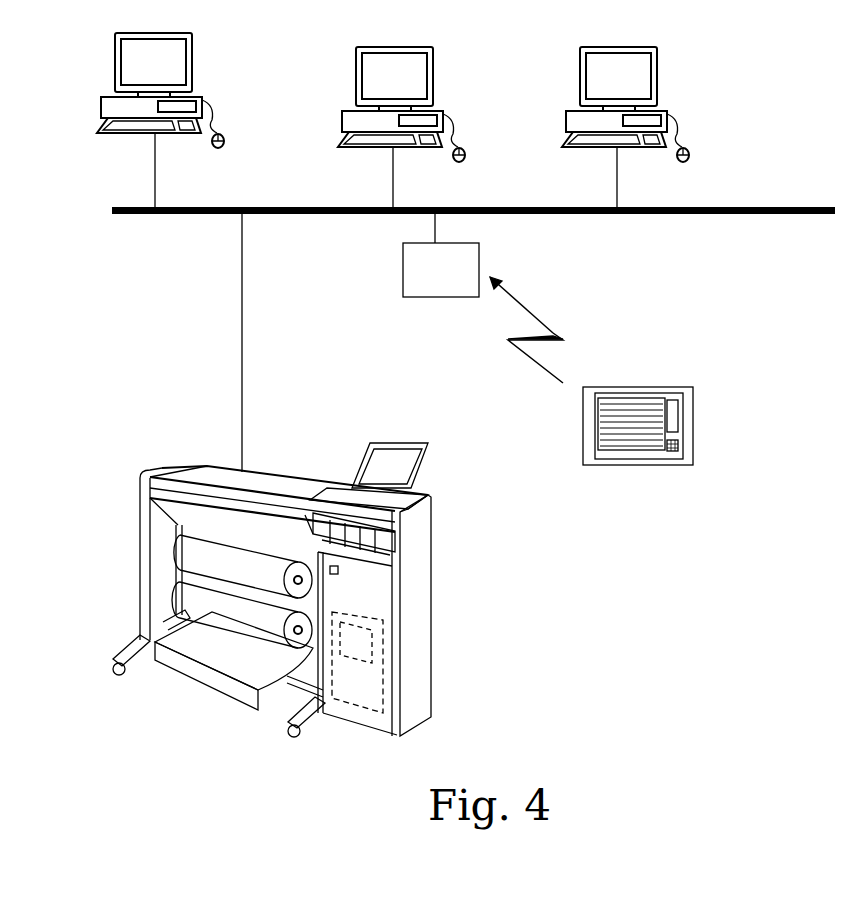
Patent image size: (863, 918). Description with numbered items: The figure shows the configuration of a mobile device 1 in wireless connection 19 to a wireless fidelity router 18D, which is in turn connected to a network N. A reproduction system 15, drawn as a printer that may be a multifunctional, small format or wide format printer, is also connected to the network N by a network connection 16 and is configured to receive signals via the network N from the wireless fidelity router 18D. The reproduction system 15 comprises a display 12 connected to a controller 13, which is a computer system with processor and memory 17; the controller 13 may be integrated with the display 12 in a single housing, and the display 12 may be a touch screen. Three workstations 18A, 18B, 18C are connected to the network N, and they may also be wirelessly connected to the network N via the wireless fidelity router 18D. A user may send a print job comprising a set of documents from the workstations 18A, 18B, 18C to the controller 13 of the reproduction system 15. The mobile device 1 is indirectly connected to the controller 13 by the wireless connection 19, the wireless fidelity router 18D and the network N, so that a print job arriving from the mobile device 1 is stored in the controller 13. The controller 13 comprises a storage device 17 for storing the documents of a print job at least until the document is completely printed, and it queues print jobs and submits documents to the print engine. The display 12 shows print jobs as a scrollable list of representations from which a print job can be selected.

The mobile device 1 is at (735, 414).
The display 12 is at (368, 453).
The controller 13 is at (362, 695).
The reproduction system 15 is at (457, 583).
The network connection 16 is at (242, 340).
The storage device 17 is at (354, 642).
The workstation 18A is at (205, 103).
The workstation 18B is at (446, 118).
The workstation 18C is at (670, 120).
The wireless fidelity router 18D is at (401, 268).
The wireless connection 19 is at (553, 330).
The network N is at (825, 215).